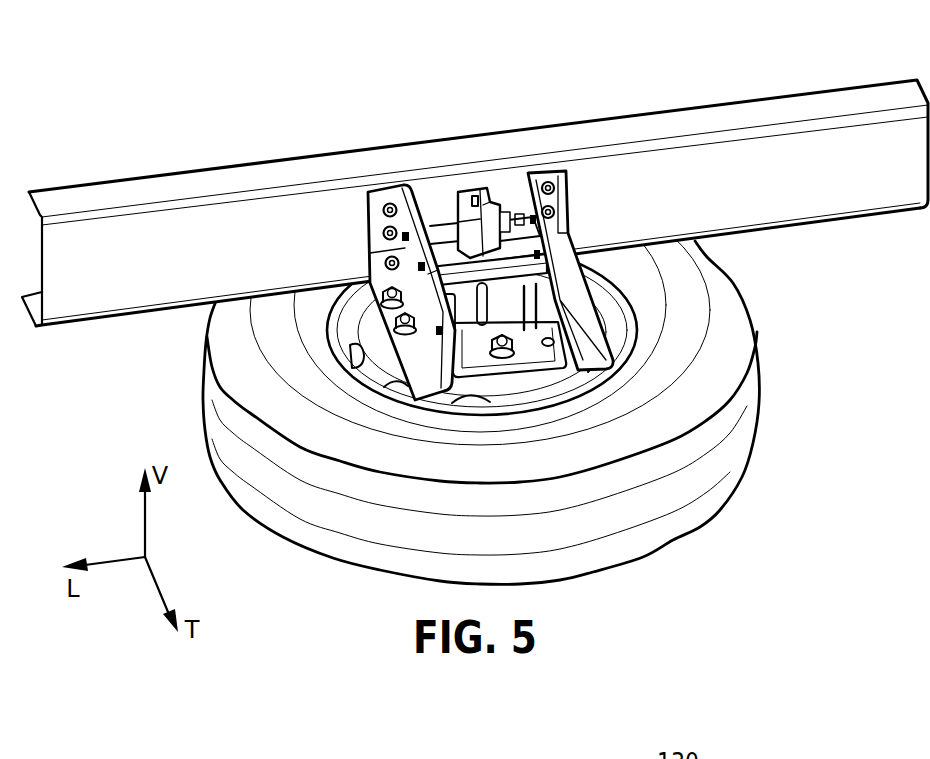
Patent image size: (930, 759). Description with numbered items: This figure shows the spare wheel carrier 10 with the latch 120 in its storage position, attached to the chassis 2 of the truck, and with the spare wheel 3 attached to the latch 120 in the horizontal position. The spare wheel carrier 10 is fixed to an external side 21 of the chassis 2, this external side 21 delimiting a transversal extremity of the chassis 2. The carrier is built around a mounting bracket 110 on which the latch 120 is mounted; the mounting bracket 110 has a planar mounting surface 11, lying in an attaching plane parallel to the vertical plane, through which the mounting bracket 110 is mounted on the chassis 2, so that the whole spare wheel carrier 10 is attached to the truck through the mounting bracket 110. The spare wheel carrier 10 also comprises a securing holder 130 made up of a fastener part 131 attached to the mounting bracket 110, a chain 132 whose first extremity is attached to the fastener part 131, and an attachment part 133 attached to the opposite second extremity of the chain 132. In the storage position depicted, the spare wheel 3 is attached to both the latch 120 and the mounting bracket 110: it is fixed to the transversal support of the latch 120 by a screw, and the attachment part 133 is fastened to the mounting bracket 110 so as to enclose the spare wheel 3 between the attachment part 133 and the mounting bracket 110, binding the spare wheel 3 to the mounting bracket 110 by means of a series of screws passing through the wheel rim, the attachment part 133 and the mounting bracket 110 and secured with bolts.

The chassis 2 is at (107, 197).
The external side 21 is at (92, 280).
The spare wheel 3 is at (650, 508).
The spare wheel carrier 10 is at (626, 276).
The planar mounting surface 11 is at (385, 187).
The mounting bracket 110 is at (551, 168).
The latch 120 is at (532, 362).
The securing holder 130 is at (491, 215).
The fastener part 131 is at (477, 202).
The chain 132 is at (556, 345).
The attachment part 133 is at (530, 310).